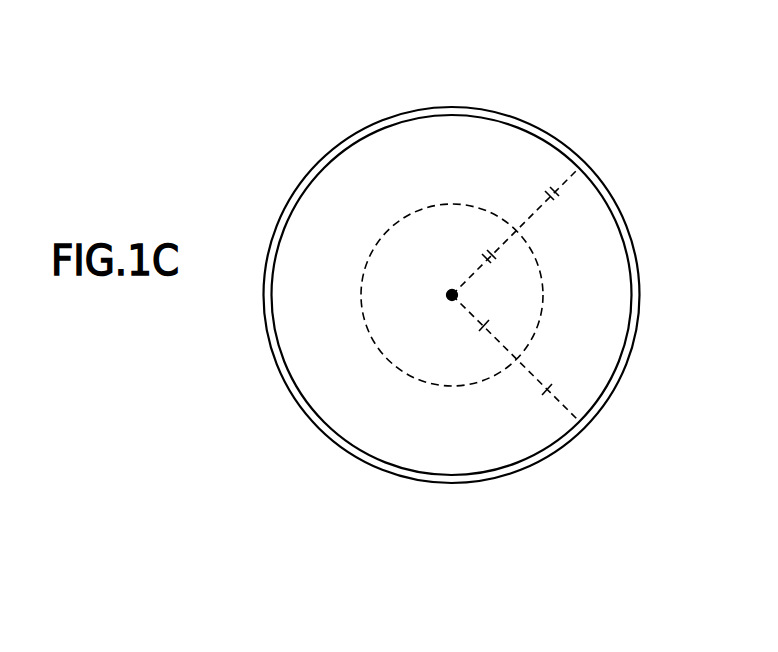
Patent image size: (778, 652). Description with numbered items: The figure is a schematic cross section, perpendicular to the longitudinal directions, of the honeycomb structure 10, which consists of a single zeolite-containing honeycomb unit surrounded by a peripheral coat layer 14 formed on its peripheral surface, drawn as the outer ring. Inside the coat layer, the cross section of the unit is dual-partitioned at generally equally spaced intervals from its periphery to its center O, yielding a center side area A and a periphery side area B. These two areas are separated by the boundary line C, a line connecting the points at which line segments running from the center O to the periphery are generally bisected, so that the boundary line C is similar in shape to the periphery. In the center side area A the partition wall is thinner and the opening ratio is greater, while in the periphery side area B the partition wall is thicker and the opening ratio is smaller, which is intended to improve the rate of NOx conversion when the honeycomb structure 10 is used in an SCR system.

The honeycomb structure 10 is at (652, 49).
The peripheral coat layer 14 is at (639, 292).
The boundary line C is at (535, 257).
The center side area A is at (511, 231).
The periphery side area B is at (511, 272).
The center O is at (452, 313).